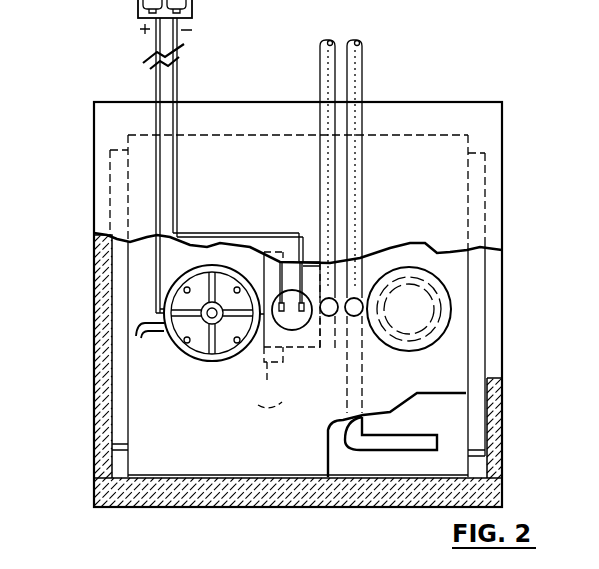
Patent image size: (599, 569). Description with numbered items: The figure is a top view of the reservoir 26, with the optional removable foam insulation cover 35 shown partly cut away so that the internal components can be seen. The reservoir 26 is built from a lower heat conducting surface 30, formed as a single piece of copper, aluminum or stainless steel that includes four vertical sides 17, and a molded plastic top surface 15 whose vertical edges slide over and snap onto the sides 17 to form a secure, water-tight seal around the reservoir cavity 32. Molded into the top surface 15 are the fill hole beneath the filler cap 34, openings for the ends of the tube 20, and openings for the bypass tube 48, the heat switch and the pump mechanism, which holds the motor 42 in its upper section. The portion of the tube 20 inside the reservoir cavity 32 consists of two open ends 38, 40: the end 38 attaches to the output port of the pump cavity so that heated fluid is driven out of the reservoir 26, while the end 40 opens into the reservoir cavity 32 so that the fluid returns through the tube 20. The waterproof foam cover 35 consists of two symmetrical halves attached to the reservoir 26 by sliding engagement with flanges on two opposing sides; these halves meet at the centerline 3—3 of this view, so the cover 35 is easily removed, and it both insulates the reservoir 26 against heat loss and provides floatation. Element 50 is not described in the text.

The top surface 15 is at (143, 458).
The vertical sides 17 is at (267, 113).
The tube 20 is at (358, 72).
The reservoir 26 is at (517, 110).
The lower heat conducting surface 30 is at (97, 424).
The reservoir cavity 32 is at (430, 421).
The filler cap 34 is at (409, 309).
The foam insulation cover 35 is at (497, 172).
The open end of tube 38 is at (285, 330).
The open end of tube 40 is at (437, 450).
The motor 42 is at (229, 156).
The bypass tube 48 is at (158, 340).
The tube 50 is at (323, 218).
The centerline 3- 3 is at (492, 308).